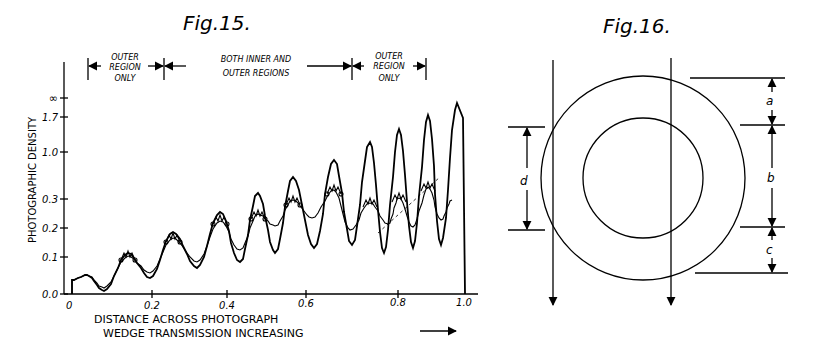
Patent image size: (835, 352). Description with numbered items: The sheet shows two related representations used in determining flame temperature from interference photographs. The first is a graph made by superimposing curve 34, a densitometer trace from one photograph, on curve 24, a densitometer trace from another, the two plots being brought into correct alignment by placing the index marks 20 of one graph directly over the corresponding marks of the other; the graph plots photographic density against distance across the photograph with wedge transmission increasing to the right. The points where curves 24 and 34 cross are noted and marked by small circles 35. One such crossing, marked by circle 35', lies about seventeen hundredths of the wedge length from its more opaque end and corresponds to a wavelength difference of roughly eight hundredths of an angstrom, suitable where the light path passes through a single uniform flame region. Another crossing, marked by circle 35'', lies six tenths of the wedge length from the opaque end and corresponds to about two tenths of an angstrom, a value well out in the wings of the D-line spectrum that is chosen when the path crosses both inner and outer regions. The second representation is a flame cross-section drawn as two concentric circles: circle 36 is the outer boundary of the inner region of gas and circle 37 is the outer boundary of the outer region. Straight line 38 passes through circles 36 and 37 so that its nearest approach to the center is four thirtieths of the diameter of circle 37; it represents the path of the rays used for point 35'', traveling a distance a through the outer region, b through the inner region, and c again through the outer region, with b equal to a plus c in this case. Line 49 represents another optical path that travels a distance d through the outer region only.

In FIG. 15, the index marks 20 is at (93, 298).
In FIG. 15, the curve 24 is at (251, 198).
In FIG. 15, the curve 34 is at (207, 239).
In FIG. 15, the small circles 35 is at (220, 241).
In FIG. 15, the circle 35' is at (131, 269).
In FIG. 15, the circle 35'' is at (293, 220).
In FIG. 16, the circle 36 is at (643, 174).
In FIG. 16, the circle 37 is at (591, 92).
In FIG. 16, the straight line 38 is at (667, 90).
In FIG. 16, the line 49 is at (552, 76).